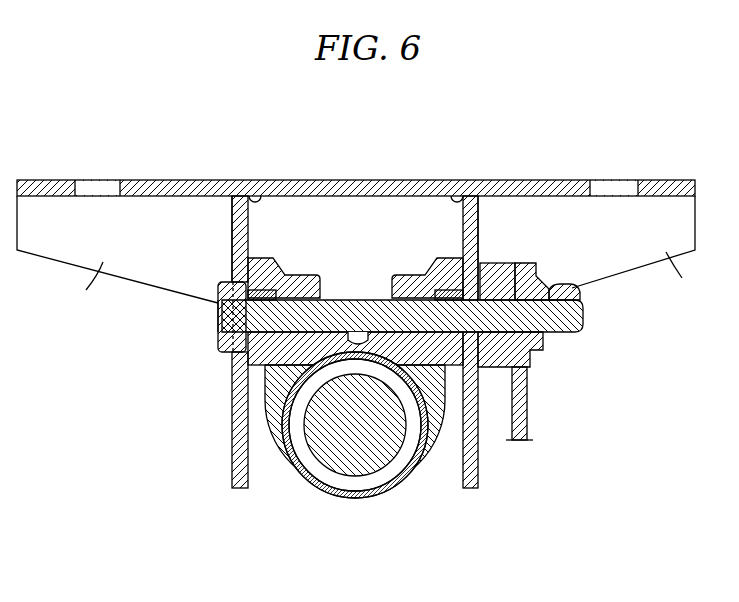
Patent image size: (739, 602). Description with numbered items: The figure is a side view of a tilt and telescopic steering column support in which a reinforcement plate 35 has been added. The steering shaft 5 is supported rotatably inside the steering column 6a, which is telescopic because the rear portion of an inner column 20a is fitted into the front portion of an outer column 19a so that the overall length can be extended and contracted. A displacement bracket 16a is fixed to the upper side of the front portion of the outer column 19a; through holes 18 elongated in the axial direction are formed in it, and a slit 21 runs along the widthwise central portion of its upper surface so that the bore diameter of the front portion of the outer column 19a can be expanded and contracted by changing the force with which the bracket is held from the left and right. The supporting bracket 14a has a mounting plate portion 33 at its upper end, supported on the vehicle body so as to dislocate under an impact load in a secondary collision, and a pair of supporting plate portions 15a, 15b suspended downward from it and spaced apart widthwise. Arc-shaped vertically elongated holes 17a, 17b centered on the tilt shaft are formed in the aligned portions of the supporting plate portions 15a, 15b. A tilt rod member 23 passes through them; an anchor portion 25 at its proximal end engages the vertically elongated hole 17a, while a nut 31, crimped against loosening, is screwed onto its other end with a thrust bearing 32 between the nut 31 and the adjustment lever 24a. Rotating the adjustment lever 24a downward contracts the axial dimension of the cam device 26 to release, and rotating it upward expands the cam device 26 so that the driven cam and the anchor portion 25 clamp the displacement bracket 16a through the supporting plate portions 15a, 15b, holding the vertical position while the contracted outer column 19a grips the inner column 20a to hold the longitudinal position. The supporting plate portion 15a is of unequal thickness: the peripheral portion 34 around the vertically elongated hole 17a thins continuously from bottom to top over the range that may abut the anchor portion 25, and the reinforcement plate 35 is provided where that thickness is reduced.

The steering shaft 5 is at (372, 445).
The steering column 6a is at (344, 512).
The supporting bracket 14a is at (401, 186).
The supporting plate portion 15a is at (238, 452).
The supporting plate portion 15b is at (478, 455).
The displacement bracket 16a is at (268, 256).
The vertically elongated hole 17a is at (232, 367).
The vertically elongated hole 17b is at (515, 368).
The through holes 18 is at (220, 314).
The outer column 19a is at (300, 492).
The inner column 20a is at (378, 505).
The slit 21 is at (362, 301).
The tilt rod member 23 is at (358, 300).
The adjustment lever 24a is at (522, 408).
The anchor portion 25 is at (220, 320).
The cam device 26 is at (492, 262).
The nut 31 is at (573, 288).
The thrust bearing 32 is at (532, 280).
The mounting plate portion 33 is at (471, 200).
The peripheral portion 34 is at (232, 248).
The reinforcement plate 35 is at (356, 262).